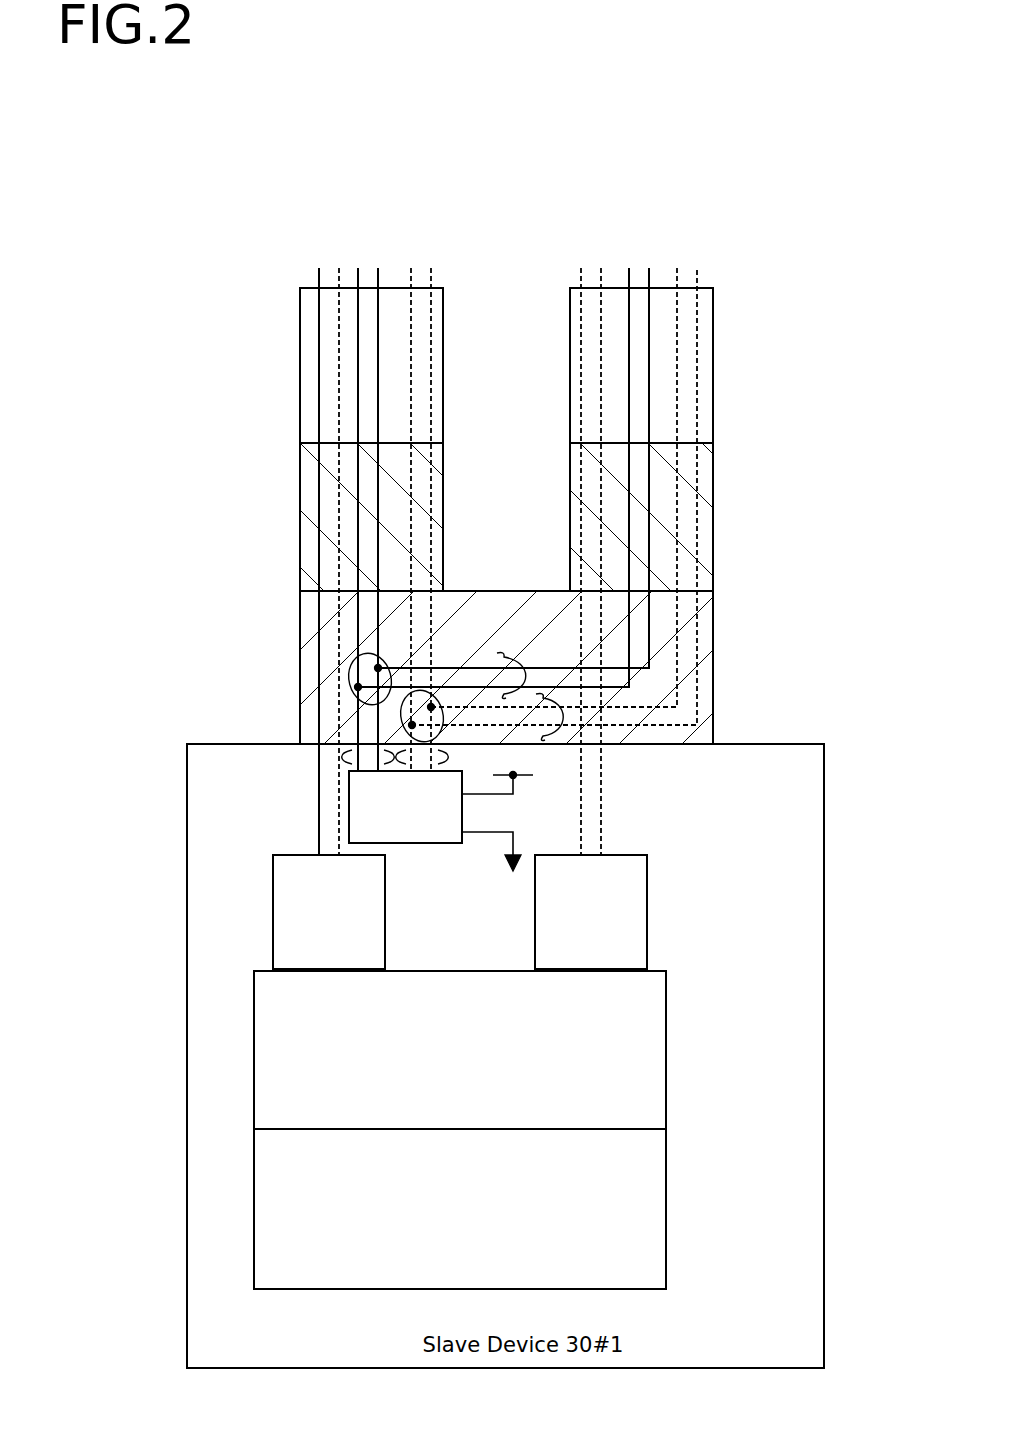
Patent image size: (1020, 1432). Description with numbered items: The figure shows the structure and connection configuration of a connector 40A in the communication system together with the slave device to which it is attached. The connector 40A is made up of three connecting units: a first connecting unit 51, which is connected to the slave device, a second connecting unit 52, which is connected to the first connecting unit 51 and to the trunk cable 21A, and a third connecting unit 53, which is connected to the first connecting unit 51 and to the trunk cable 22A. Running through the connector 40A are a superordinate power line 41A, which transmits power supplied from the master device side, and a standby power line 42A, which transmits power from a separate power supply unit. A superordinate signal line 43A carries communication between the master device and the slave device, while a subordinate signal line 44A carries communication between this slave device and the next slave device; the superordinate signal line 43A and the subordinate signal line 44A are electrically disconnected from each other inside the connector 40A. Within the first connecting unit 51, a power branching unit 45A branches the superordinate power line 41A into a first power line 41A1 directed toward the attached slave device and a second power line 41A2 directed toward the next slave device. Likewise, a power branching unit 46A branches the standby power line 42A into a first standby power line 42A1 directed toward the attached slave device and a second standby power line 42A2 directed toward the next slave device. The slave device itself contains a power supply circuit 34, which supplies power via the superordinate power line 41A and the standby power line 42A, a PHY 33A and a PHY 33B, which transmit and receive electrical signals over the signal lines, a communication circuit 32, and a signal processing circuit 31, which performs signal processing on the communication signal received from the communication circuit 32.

The trunk cable 21A is at (280, 396).
The trunk cable 22A is at (740, 365).
The connector 40A is at (178, 612).
The first connecting unit 51 is at (740, 635).
The second connecting unit 52 is at (280, 550).
The third connecting unit 53 is at (740, 518).
The superordinate power line 41A is at (383, 268).
The standby power line 42A is at (434, 268).
The superordinate signal line 43A is at (342, 268).
The subordinate signal line 44A is at (607, 268).
The first power line 41A1 is at (348, 758).
The second power line 41A2 is at (503, 657).
The first standby power line 42A1 is at (445, 758).
The second standby power line 42A2 is at (560, 697).
The power branching unit 45A is at (357, 687).
The power branching unit 46A is at (411, 725).
The signal processing circuit 31 is at (655, 1206).
The communication circuit 32 is at (655, 1051).
The PHY 33A is at (273, 890).
The PHY 33B is at (647, 918).
The power supply circuit 34 is at (437, 845).